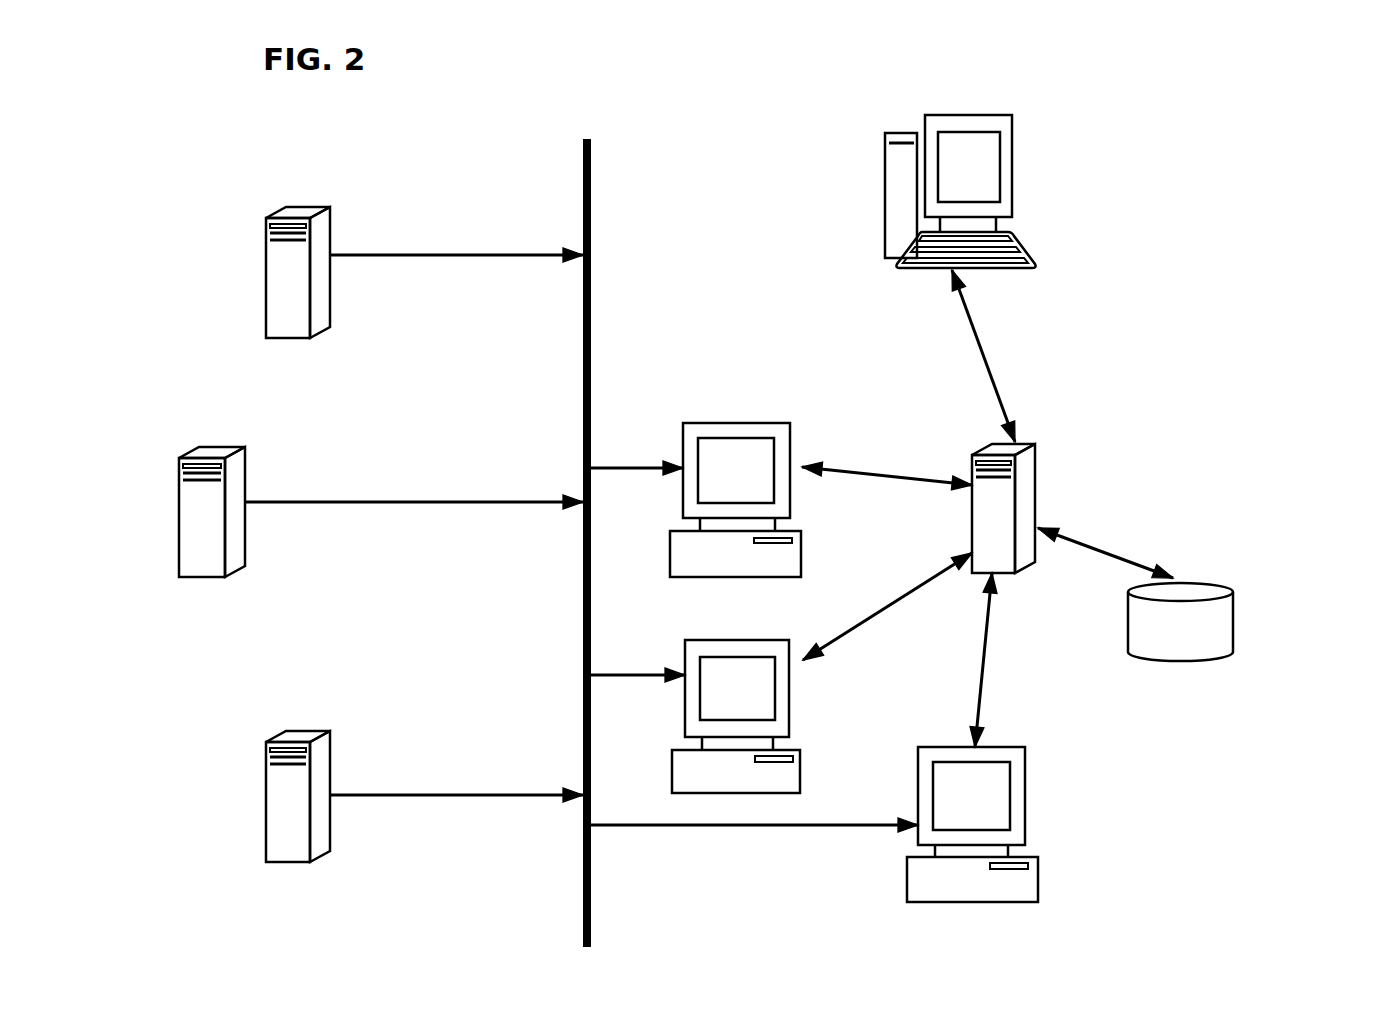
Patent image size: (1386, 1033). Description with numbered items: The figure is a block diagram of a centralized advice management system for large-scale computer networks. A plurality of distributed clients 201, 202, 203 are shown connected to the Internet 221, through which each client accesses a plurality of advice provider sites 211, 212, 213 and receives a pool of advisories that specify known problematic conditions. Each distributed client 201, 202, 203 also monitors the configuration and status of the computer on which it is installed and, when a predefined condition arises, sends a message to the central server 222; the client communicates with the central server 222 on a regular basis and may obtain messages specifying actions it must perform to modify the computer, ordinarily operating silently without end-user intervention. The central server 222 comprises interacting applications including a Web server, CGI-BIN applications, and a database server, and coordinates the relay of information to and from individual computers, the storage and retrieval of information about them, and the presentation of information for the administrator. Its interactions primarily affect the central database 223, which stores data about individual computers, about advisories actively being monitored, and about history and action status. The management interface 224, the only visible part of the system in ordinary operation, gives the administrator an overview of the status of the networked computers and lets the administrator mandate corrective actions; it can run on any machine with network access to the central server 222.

The distributed client 201 is at (1035, 812).
The distributed client 202 is at (800, 750).
The distributed client 203 is at (737, 423).
The advice provider site 211 is at (310, 729).
The advice provider site 212 is at (225, 447).
The advice provider site 213 is at (308, 208).
The Internet 221 is at (590, 172).
The central server 222 is at (1037, 497).
The central database 223 is at (1233, 595).
The management interface 224 is at (1013, 178).